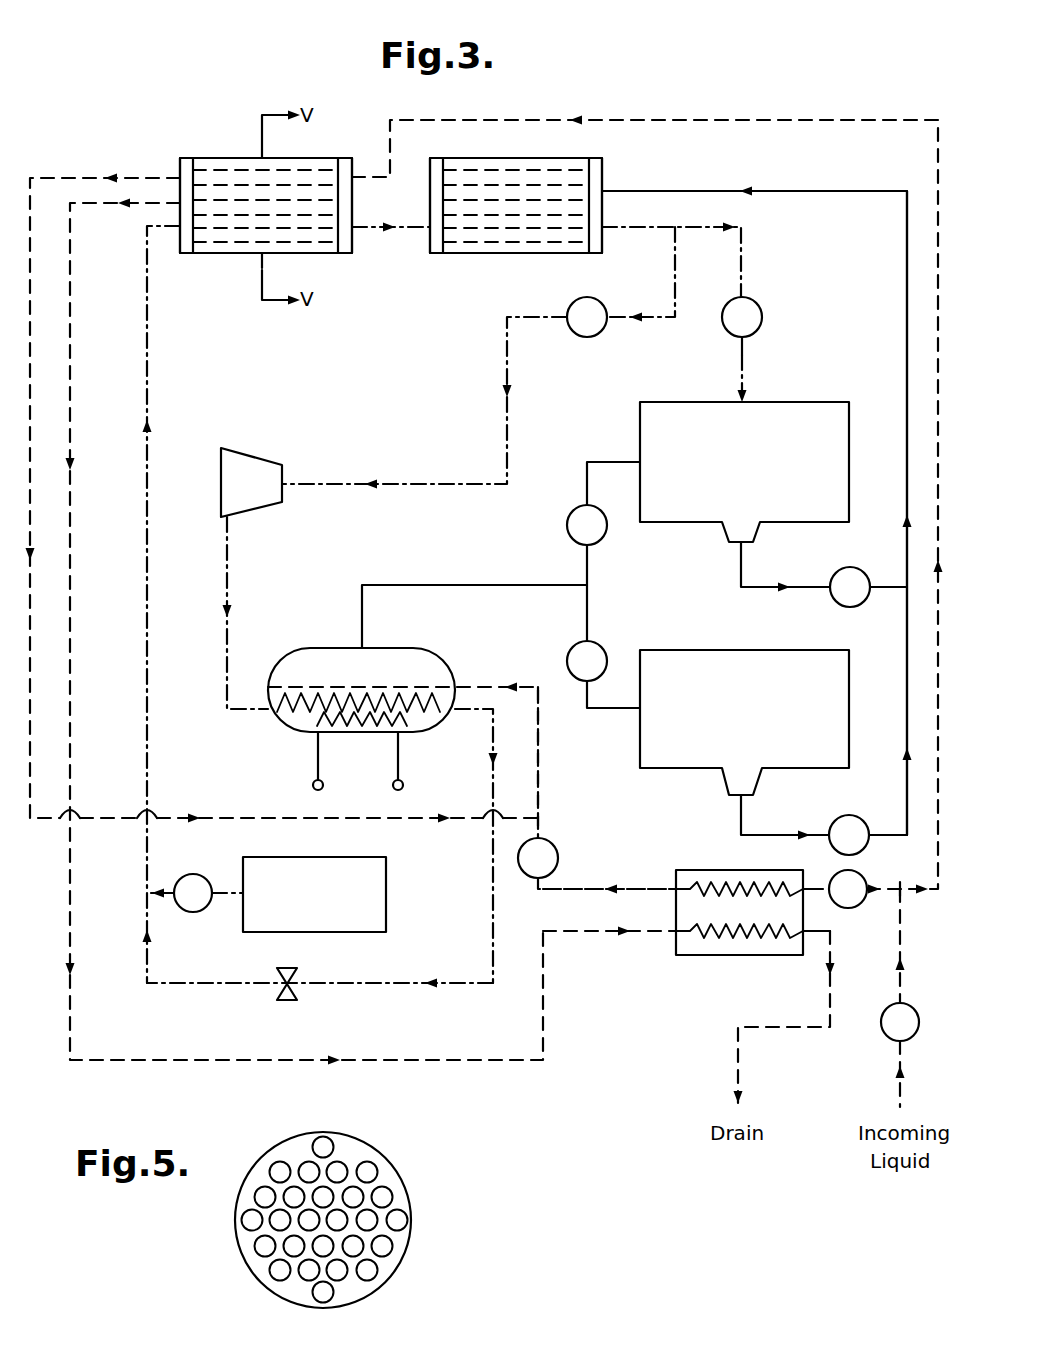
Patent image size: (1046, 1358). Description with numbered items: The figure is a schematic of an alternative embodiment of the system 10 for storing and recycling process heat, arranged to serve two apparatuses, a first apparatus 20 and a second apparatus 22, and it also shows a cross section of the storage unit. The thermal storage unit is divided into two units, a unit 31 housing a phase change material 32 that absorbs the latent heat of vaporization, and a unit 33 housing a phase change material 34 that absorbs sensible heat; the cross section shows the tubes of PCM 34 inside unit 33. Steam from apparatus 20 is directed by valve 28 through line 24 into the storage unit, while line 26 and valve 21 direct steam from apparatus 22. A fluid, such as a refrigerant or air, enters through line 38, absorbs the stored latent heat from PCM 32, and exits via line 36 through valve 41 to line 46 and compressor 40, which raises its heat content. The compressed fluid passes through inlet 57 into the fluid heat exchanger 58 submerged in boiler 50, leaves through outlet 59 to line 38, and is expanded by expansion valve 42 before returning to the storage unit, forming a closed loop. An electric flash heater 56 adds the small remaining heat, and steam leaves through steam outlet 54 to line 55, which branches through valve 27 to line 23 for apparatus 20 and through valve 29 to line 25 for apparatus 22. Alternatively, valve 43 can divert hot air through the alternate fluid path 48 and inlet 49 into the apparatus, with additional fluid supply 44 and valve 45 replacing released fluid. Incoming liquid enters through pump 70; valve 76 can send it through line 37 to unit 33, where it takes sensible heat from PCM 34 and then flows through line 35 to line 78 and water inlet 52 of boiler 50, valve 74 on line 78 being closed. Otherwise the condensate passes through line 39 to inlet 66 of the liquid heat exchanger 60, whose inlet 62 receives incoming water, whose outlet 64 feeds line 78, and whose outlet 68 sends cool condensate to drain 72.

In FIG. 3, the system 10 is at (540, 108).
In FIG. 3, the apparatus 20 is at (818, 402).
In FIG. 3, the valve 21 is at (850, 815).
In FIG. 3, the apparatus 22 is at (757, 650).
In FIG. 3, the line 23 is at (605, 462).
In FIG. 3, the line 24 is at (810, 193).
In FIG. 3, the line 25 is at (612, 708).
In FIG. 3, the line 26 is at (907, 642).
In FIG. 3, the valve 27 is at (567, 526).
In FIG. 3, the valve 28 is at (835, 578).
In FIG. 3, the valve 29 is at (598, 646).
In FIG. 3, the thermal storage unit 31 is at (475, 253).
In FIG. 3, the phase change material 32 is at (525, 228).
In FIG. 3, the thermal storage unit 33 is at (230, 160).
In FIG. 5, the thermal storage unit 33 is at (395, 1158).
In FIG. 3, the phase change material 34 is at (245, 226).
In FIG. 5, the phase change material 34 is at (388, 1244).
In FIG. 3, the line 35 is at (55, 178).
In FIG. 3, the line 36 is at (612, 227).
In FIG. 3, the line 37 is at (795, 125).
In FIG. 3, the line 38 is at (150, 386).
In FIG. 3, the line 39 is at (70, 285).
In FIG. 3, the compressor 40 is at (250, 462).
In FIG. 3, the valve 41 is at (582, 338).
In FIG. 3, the expansion valve 42 is at (280, 1000).
In FIG. 3, the valve 43 is at (762, 315).
In FIG. 3, the additional fluid supply 44 is at (392, 878).
In FIG. 3, the valve 45 is at (210, 875).
In FIG. 3, the line 46 is at (507, 432).
In FIG. 3, the alternate fluid path 48 is at (742, 352).
In FIG. 3, the inlet 49 is at (745, 402).
In FIG. 3, the boiler 50 is at (322, 648).
In FIG. 3, the water inlet 52 is at (455, 687).
In FIG. 3, the steam outlet 54 is at (365, 648).
In FIG. 3, the line 55 is at (440, 585).
In FIG. 3, the electric flash heater 56 is at (375, 732).
In FIG. 3, the inlet 57 is at (265, 709).
In FIG. 3, the fluid heat exchanger 58 is at (297, 725).
In FIG. 3, the outlet 59 is at (460, 720).
In FIG. 3, the liquid heat exchanger 60 is at (703, 870).
In FIG. 3, the inlet 62 is at (805, 886).
In FIG. 3, the outlet 64 is at (668, 886).
In FIG. 3, the inlet 66 is at (670, 931).
In FIG. 3, the outlet 68 is at (830, 938).
In FIG. 3, the pump 70 is at (920, 1012).
In FIG. 3, the drain 72 is at (733, 1100).
In FIG. 3, the valve 74 is at (556, 846).
In FIG. 3, the valve 76 is at (864, 880).
In FIG. 3, the line 78 is at (538, 776).